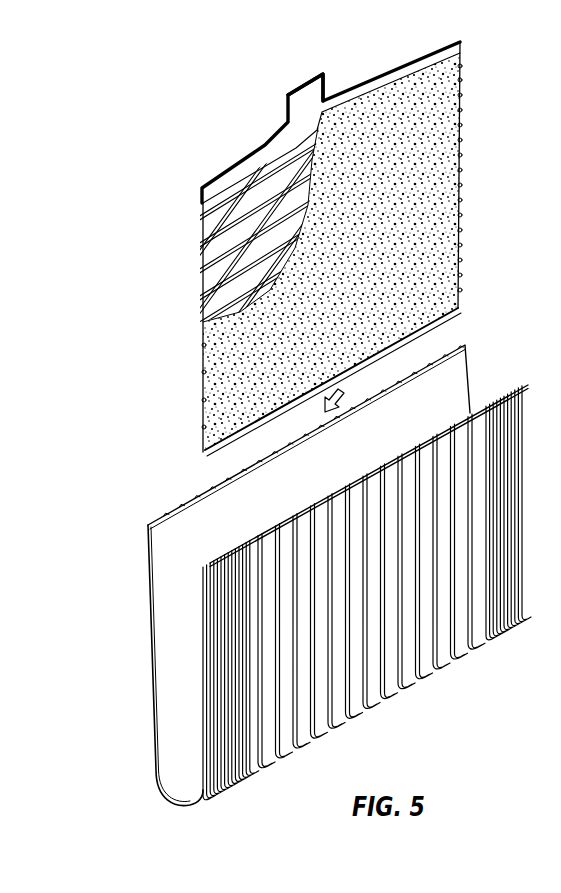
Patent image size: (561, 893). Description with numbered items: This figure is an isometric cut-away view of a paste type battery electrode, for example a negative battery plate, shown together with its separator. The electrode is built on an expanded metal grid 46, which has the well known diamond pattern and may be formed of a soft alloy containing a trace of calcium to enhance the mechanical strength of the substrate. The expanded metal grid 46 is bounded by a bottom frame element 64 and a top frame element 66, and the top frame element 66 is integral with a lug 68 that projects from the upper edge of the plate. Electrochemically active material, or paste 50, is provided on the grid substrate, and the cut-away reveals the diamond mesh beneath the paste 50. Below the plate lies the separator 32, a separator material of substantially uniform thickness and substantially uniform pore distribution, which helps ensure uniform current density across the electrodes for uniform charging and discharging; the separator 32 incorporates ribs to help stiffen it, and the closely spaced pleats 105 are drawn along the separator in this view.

The separator 32 is at (163, 617).
The expanded metal grid 46 is at (176, 262).
The paste 50 is at (420, 177).
The bottom frame element 64 is at (205, 452).
The top frame element 66 is at (268, 150).
The lug 68 is at (305, 93).
The fins 105 is at (257, 753).